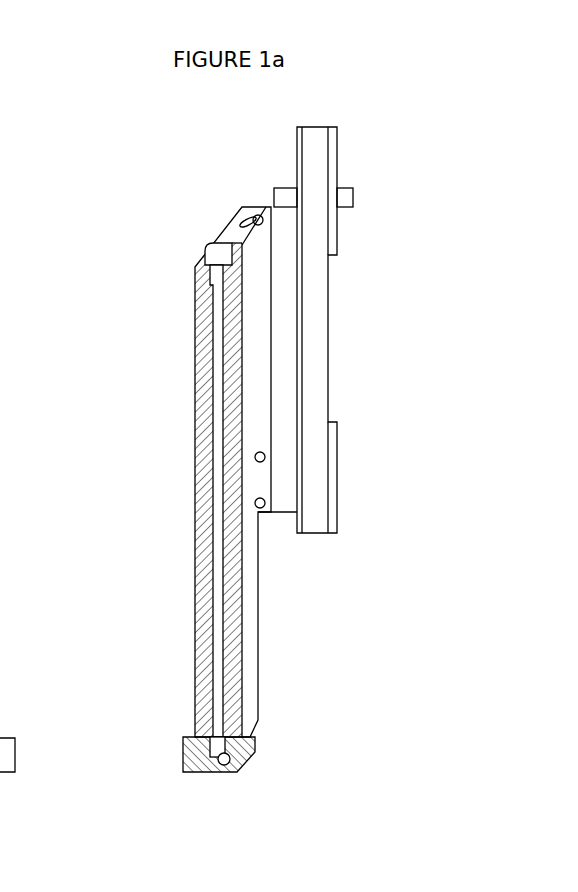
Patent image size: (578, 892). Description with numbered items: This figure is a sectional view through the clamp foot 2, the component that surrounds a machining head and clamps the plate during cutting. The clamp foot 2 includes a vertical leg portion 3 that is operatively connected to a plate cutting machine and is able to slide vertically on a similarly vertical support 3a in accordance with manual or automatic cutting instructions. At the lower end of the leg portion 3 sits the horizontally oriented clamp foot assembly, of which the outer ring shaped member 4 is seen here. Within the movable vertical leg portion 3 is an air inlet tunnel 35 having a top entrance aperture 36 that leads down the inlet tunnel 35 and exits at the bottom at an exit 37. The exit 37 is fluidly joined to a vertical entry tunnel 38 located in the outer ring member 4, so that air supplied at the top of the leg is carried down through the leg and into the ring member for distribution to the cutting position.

The clamp foot 2 is at (382, 315).
The vertical leg portion 3 is at (182, 472).
The vertical support 3a is at (378, 315).
The outer ring shaped member 4 is at (127, 725).
The air inlet tunnel 35 is at (140, 501).
The top entrance aperture 36 is at (162, 240).
The exit 37 is at (294, 702).
The vertical entry tunnel 38 is at (291, 771).